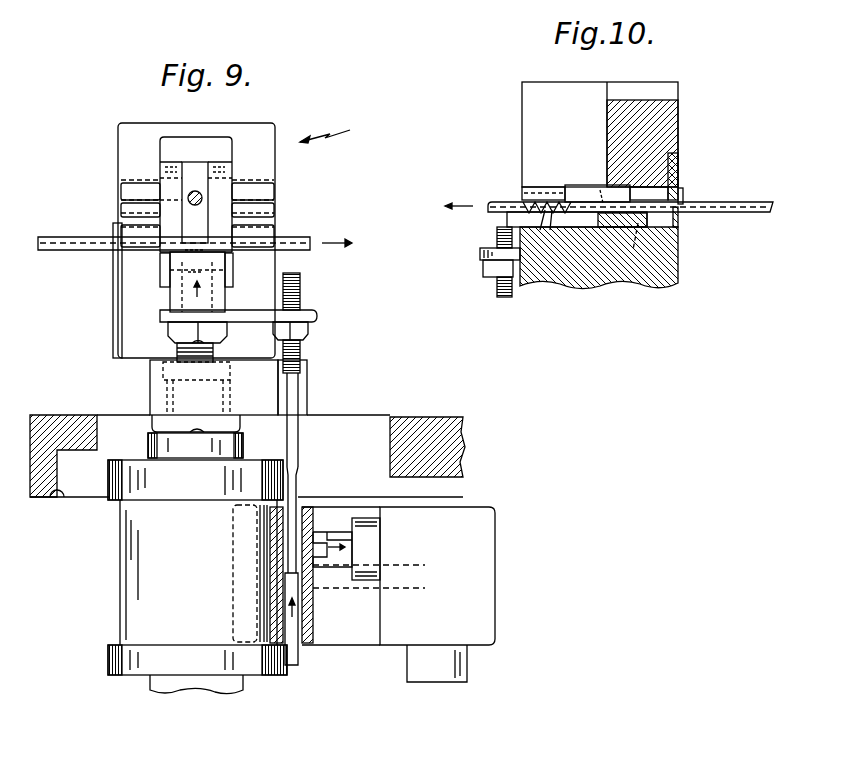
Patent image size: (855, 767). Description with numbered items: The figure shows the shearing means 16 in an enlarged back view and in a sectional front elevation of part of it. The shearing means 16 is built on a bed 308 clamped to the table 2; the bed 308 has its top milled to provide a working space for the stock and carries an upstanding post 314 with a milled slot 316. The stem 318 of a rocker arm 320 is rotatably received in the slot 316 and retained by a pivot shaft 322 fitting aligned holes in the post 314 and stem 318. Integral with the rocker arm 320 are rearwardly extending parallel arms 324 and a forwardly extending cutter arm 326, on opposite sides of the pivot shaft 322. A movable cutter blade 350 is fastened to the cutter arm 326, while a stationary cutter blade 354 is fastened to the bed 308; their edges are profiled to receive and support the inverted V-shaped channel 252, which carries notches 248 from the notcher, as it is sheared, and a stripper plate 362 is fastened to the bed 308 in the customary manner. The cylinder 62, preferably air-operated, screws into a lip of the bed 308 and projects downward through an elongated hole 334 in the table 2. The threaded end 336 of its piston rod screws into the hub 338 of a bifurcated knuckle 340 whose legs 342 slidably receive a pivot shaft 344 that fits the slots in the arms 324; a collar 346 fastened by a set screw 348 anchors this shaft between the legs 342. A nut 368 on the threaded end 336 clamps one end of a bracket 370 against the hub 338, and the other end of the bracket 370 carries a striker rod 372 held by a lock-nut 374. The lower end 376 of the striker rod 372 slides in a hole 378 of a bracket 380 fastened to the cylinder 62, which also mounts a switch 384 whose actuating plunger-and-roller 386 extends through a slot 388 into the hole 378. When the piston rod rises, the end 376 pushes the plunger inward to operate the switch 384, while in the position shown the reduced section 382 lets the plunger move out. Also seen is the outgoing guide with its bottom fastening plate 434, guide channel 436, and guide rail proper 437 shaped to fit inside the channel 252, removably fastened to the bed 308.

In FIG. 9, the table 2 is at (56, 415).
In FIG. 9, the shearing means 16 is at (339, 130).
In FIG. 9, the cylinder 62 is at (130, 573).
In FIG. 10, the notches 248 is at (547, 228).
In FIG. 10, the inverted V-shaped channel 252 is at (497, 202).
In FIG. 9, the bed 308 is at (126, 327).
In FIG. 10, the bed 308 is at (660, 277).
In FIG. 10, the upstanding post 314 is at (525, 195).
In FIG. 9, the slot 316 is at (166, 272).
In FIG. 9, the stem 318 is at (165, 278).
In FIG. 10, the stem 318 is at (577, 192).
In FIG. 10, the rocker arm 320 is at (528, 95).
In FIG. 9, the pivot shaft 322 is at (112, 262).
In FIG. 9, the rearwardly extending parallel arms 324 is at (127, 141).
In FIG. 10, the cutter arm 326 is at (665, 112).
In FIG. 9, the elongated hole 334 is at (64, 498).
In FIG. 9, the threaded end 336 is at (216, 354).
In FIG. 9, the hub 338 is at (218, 298).
In FIG. 9, the bifurcated knuckle 340 is at (119, 219).
In FIG. 9, the legs 342 is at (221, 165).
In FIG. 9, the pivot shaft 344 is at (266, 207).
In FIG. 9, the collar 346 is at (187, 178).
In FIG. 9, the set screw 348 is at (200, 194).
In FIG. 10, the movable cutter blade 350 is at (676, 168).
In FIG. 10, the stationary cutter blade 354 is at (680, 252).
In FIG. 9, the stripper plate 362 is at (115, 281).
In FIG. 10, the stripper plate 362 is at (682, 192).
In FIG. 9, the nut 368 is at (174, 333).
In FIG. 9, the bracket 370 is at (240, 317).
In FIG. 10, the bracket 370 is at (480, 253).
In FIG. 9, the striker rod 372 is at (293, 384).
In FIG. 10, the striker rod 372 is at (497, 288).
In FIG. 9, the lock-nut 374 is at (303, 331).
In FIG. 9, the lower end 376 is at (293, 655).
In FIG. 9, the hole 378 is at (296, 627).
In FIG. 9, the bracket 380 is at (370, 633).
In FIG. 9, the reduced section 382 is at (300, 482).
In FIG. 9, the switch 384 is at (480, 598).
In FIG. 9, the actuating plunger-and-roller 386 is at (330, 563).
In FIG. 9, the slot 388 is at (320, 517).
In FIG. 10, the bottom fastening plate 434 is at (642, 247).
In FIG. 10, the guide channel 436 is at (605, 218).
In FIG. 10, the guide rail proper 437 is at (600, 190).